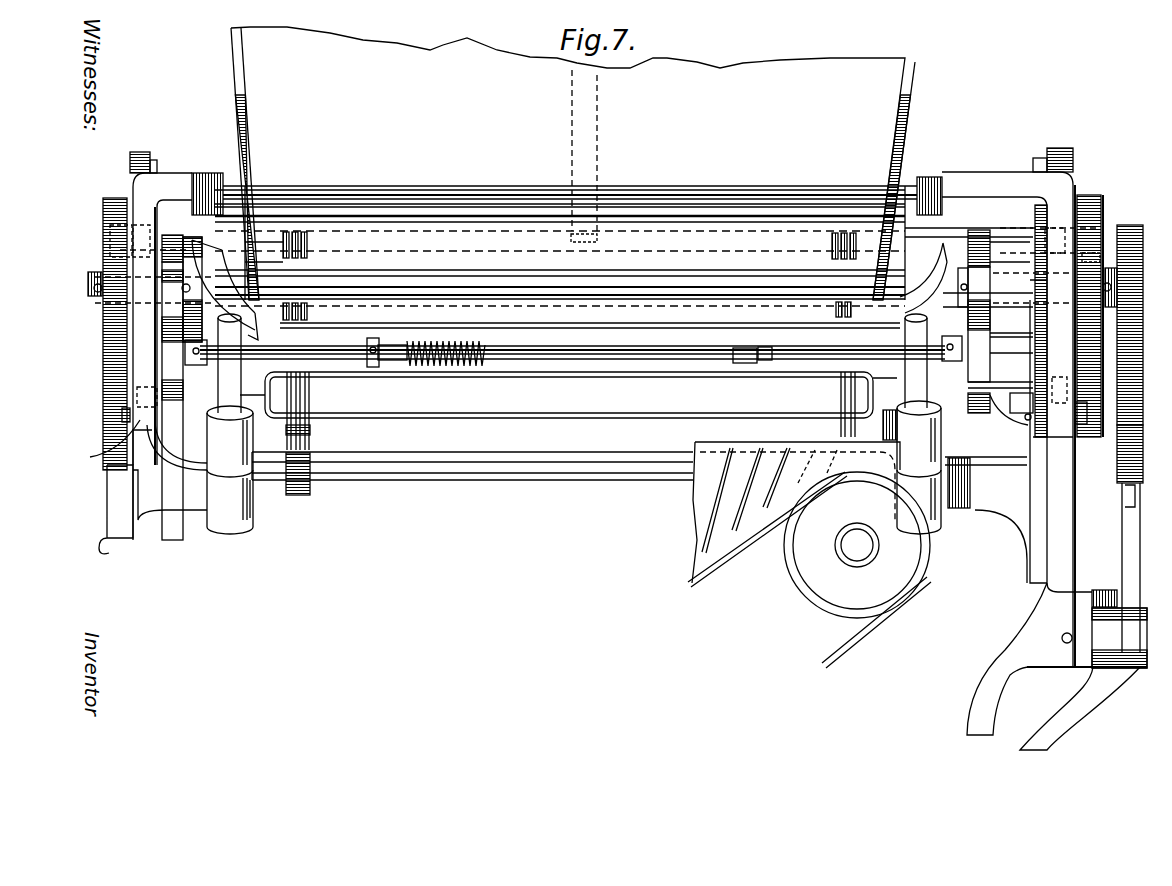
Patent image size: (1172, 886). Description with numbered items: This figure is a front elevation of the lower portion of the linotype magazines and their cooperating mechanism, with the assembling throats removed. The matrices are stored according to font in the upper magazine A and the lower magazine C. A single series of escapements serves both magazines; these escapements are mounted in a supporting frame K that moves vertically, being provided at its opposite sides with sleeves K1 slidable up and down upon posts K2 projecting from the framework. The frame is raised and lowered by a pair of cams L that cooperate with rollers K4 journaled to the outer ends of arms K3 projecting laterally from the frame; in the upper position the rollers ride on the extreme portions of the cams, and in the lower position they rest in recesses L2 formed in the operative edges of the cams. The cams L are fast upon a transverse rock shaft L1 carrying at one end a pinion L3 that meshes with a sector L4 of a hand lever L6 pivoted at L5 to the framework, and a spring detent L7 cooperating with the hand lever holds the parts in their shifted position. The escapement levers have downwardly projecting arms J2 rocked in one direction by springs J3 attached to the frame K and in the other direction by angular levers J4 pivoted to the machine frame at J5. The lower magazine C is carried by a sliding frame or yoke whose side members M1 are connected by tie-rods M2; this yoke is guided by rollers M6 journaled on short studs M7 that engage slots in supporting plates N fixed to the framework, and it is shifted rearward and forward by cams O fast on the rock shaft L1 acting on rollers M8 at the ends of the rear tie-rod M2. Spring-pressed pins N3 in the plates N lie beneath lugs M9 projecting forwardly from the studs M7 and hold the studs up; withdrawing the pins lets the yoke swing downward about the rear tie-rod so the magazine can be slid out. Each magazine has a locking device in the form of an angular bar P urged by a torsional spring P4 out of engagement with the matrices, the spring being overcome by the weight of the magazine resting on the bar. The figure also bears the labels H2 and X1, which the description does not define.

The magazine A is at (810, 72).
The magazine C is at (915, 102).
The paper holding plate H2 is at (737, 200).
The supporting frame K is at (455, 432).
The sleeves K1 is at (223, 455).
The posts K2 is at (240, 397).
The arms K3 is at (232, 240).
The rollers K4 is at (172, 240).
The cams L is at (150, 345).
The rock shaft L1 is at (295, 230).
The recesses L2 is at (1016, 245).
The pinion L3 is at (1142, 292).
The sector L4 is at (1120, 487).
The pivot L5 is at (1147, 667).
The hand lever L6 is at (1068, 722).
The spring detent L7 is at (1107, 593).
The side members M1 is at (168, 325).
The tie-rods M2 is at (657, 355).
The rollers M6 is at (140, 390).
The studs M7 is at (170, 407).
The rollers M8 is at (125, 240).
The lugs M9 is at (143, 432).
The supporting plates N is at (141, 165).
The spring-pressed pins N3 is at (122, 415).
The cams O is at (87, 283).
The angular bar P is at (590, 340).
The torsional spring P4 is at (443, 362).
The platen collar X1 is at (308, 228).
The arms J2 is at (307, 420).
The springs J3 is at (308, 435).
The angular levers J4 is at (310, 490).
The pivot J5 is at (448, 477).